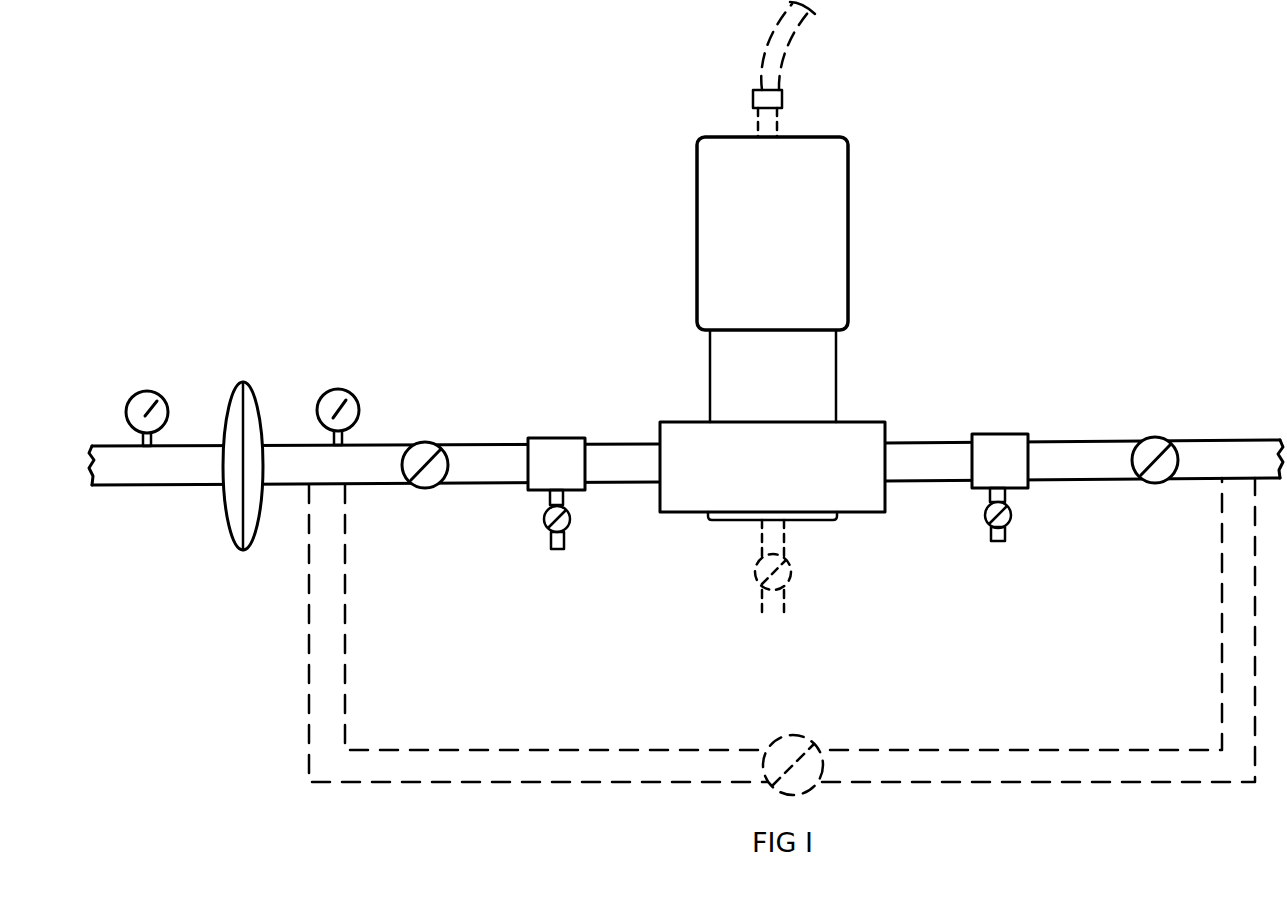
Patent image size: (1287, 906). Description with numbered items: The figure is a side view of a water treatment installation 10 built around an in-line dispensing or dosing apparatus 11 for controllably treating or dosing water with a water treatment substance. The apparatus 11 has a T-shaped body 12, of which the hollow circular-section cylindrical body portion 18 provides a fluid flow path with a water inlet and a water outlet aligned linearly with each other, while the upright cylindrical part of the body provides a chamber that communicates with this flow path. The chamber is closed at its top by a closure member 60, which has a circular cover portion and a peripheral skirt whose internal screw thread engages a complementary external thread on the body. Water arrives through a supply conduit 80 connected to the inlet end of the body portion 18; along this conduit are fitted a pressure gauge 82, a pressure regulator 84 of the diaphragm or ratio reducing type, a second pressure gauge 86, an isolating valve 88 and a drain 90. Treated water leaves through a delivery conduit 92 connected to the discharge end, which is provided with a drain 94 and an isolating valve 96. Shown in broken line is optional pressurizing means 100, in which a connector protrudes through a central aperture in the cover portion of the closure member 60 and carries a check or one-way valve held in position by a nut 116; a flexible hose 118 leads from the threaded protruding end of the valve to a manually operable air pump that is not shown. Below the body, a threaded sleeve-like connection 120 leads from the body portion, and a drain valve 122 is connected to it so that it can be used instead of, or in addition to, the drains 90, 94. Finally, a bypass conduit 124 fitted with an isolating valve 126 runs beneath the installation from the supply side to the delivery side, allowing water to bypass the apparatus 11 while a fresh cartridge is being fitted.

The water treatment installation 10 is at (1135, 138).
The apparatus 11 is at (860, 355).
The T-shaped body 12 is at (808, 392).
The cylindrical body portion 18 is at (702, 490).
The closure member 60 is at (826, 237).
The supply conduit 80 is at (485, 462).
The pressure gauge 82 is at (140, 400).
The pressure regulator 84 is at (252, 428).
The pressure gauge 86 is at (344, 402).
The isolating valve 88 is at (430, 476).
The drain 90 is at (558, 455).
The delivery conduit 92 is at (1072, 458).
The drain 94 is at (995, 452).
The isolating valve 96 is at (1147, 445).
The pressurizing means 100 is at (780, 124).
The nut 116 is at (787, 98).
The flexible hose 118 is at (786, 44).
The sleeve-like connection 120 is at (783, 539).
The drain valve 122 is at (790, 572).
The bypass conduit 124 is at (638, 752).
The isolating valve 126 is at (813, 745).